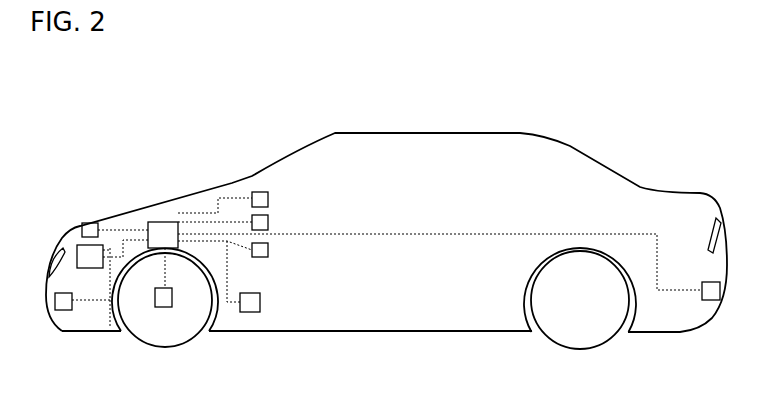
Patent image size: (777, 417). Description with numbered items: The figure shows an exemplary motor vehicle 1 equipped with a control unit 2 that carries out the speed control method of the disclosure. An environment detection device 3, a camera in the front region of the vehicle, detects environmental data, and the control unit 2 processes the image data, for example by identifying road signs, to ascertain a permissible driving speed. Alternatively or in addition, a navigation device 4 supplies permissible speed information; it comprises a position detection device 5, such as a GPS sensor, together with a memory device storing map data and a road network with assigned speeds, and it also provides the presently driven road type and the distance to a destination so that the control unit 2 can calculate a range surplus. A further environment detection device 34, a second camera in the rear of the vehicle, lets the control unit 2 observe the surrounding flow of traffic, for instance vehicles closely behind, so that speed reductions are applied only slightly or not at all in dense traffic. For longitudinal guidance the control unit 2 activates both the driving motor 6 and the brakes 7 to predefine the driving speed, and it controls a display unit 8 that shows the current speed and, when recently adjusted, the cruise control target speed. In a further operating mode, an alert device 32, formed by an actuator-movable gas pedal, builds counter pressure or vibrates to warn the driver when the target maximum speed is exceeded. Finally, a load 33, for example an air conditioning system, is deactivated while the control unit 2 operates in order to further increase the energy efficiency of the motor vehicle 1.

The motor vehicle 1 is at (468, 95).
The control unit 2 is at (152, 221).
The environment detection device 3 is at (63, 311).
The navigation device 4 is at (268, 198).
The position detection device 5 is at (92, 222).
The driving motor 6 is at (80, 244).
The brakes 7 is at (165, 307).
The display unit 8 is at (268, 222).
The alert device 32 is at (250, 312).
The load 33 is at (268, 250).
The further environment detection device 34 is at (708, 300).